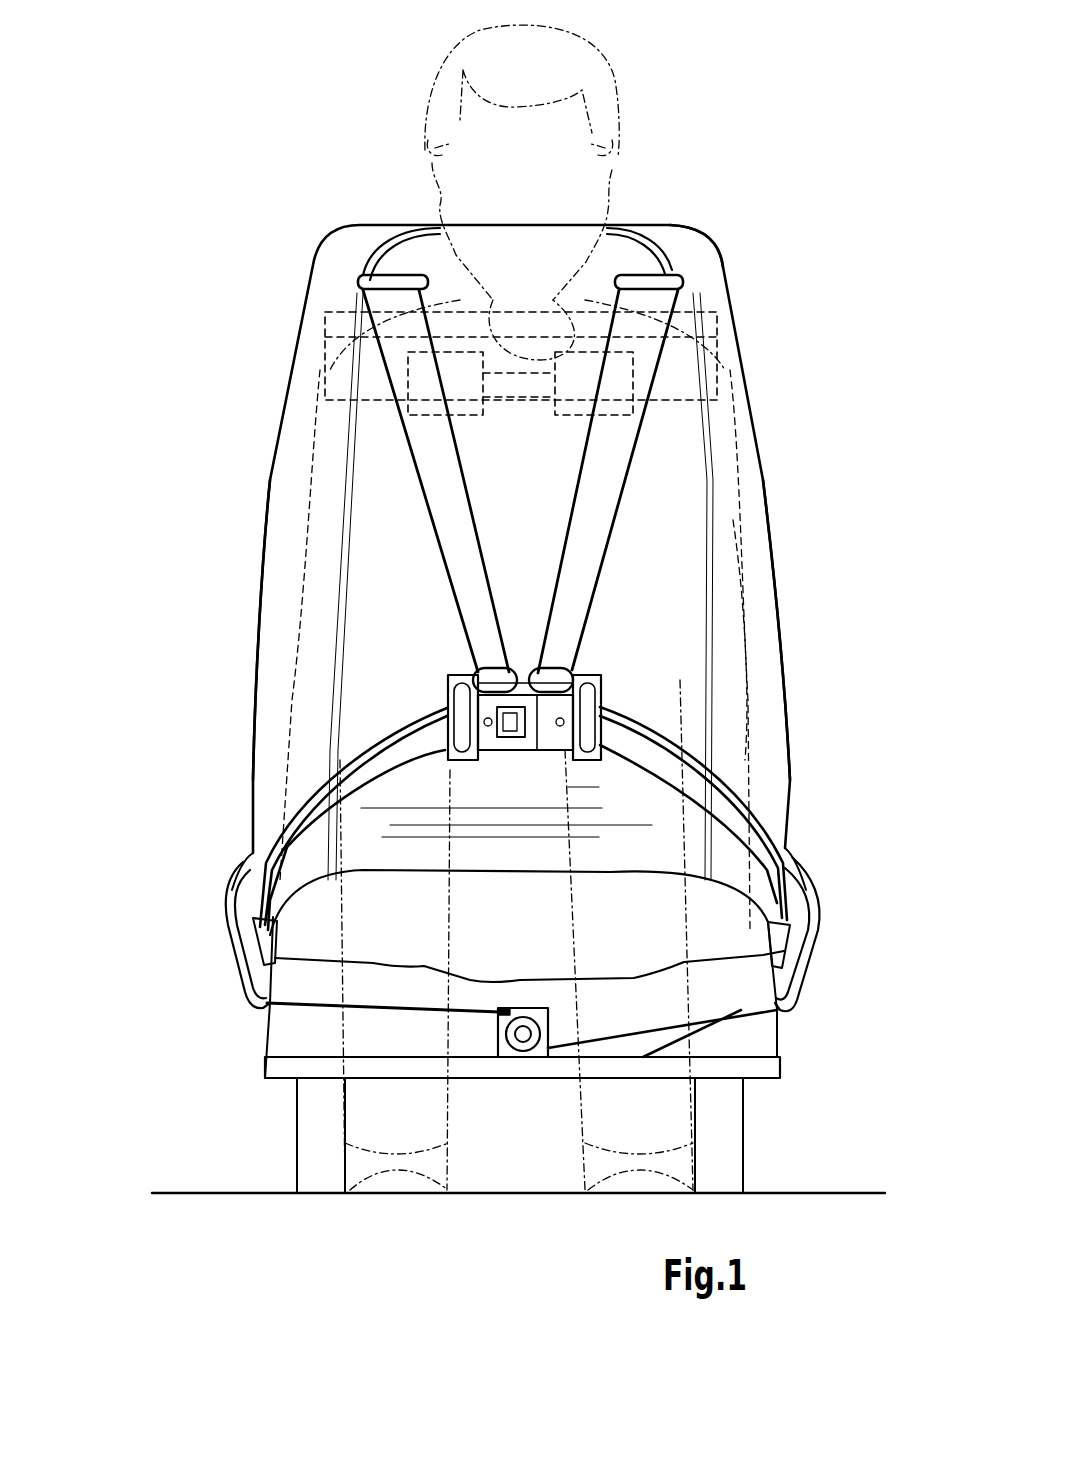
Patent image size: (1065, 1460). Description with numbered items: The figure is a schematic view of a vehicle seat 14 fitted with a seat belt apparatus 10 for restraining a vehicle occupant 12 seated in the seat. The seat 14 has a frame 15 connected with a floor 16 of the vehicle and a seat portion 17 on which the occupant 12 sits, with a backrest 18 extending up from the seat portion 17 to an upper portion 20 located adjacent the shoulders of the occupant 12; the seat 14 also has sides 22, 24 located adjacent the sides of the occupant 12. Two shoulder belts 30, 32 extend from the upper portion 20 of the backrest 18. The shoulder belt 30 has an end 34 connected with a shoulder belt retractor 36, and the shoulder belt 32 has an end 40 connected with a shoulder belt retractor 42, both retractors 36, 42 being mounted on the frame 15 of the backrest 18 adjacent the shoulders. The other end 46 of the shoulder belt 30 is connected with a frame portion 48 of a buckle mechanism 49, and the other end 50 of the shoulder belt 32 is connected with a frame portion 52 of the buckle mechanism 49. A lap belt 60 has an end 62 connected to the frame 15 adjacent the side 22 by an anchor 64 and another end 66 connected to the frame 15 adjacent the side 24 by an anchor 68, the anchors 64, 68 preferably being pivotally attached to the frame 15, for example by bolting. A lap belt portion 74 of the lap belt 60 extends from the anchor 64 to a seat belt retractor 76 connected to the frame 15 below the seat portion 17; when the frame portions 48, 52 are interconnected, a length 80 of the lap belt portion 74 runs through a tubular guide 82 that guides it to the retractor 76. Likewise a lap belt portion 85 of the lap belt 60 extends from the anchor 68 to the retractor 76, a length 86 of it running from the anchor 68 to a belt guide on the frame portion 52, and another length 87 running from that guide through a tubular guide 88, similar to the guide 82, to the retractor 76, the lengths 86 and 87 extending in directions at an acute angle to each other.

The seat belt apparatus 10 is at (735, 142).
The vehicle occupant 12 is at (520, 53).
The vehicle seat 14 is at (335, 255).
The frame 15 is at (733, 520).
The floor 16 is at (207, 1192).
The seat portion 17 is at (428, 903).
The backrest 18 is at (313, 315).
The upper portion 20 is at (713, 270).
The side 22 is at (782, 632).
The side 24 is at (257, 640).
The shoulder belt 30 is at (607, 465).
The shoulder belt 32 is at (437, 450).
The end 34 is at (607, 330).
The shoulder belt retractor 36 is at (585, 385).
The end 40 is at (437, 330).
The shoulder belt retractor 42 is at (453, 382).
The end 46 is at (567, 653).
The frame portion 48 is at (601, 665).
The buckle mechanism 49 is at (522, 634).
The end 50 is at (458, 623).
The frame portion 52 is at (447, 680).
The lap belt 60 is at (683, 772).
The end 62 is at (785, 895).
The anchor 64 is at (780, 942).
The end 66 is at (243, 905).
The anchor 68 is at (265, 947).
The lap belt portion 74 is at (628, 786).
The seat belt retractor 76 is at (500, 1042).
The length 80 is at (600, 1045).
The tubular guide 82 is at (795, 867).
The lap belt portion 85 is at (437, 778).
The length 86 is at (402, 750).
The length 87 is at (387, 730).
The tubular guide 88 is at (243, 862).